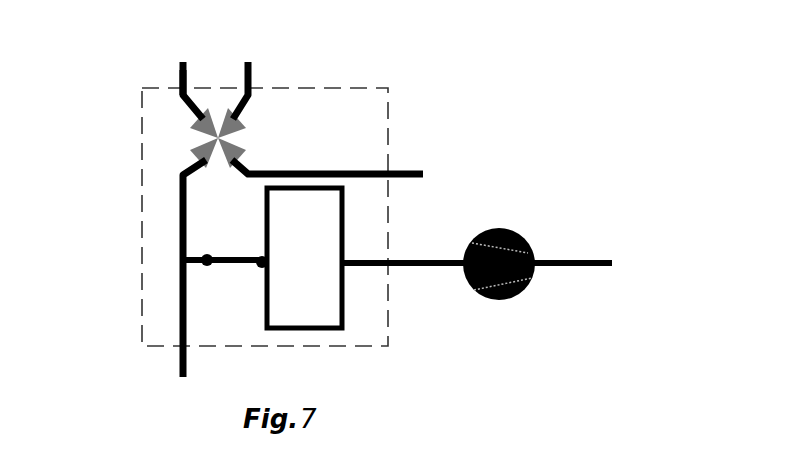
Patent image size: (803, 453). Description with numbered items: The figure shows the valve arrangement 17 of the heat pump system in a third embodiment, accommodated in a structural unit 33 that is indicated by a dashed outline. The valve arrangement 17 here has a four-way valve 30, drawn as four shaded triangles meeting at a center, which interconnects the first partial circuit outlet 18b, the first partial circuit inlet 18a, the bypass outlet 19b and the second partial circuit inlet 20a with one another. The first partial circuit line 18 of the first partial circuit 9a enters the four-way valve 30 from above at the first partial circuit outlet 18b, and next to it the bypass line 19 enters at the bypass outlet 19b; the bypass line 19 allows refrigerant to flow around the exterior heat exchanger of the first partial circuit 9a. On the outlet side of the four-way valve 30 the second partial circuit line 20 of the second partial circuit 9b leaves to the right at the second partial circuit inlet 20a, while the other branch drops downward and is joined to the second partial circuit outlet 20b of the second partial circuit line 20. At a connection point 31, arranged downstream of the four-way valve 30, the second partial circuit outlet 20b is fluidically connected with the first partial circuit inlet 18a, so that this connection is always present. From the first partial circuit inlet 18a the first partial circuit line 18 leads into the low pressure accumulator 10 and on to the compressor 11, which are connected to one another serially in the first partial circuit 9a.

The valve arrangement 17 is at (145, 198).
The 4-way valve 30 is at (175, 138).
The first partial circuit line 18 is at (401, 142).
The first partial circuit 9a is at (176, 68).
The first partial circuit outlet 18b is at (182, 92).
The bypass line 19 is at (298, 68).
The bypass outlet 19b is at (253, 83).
The second partial circuit line 20 is at (317, 264).
The second partial circuit 9b is at (317, 264).
The second partial circuit inlet 20a is at (396, 172).
The second partial circuit outlet 20b is at (182, 346).
The connection point 31 is at (185, 258).
The first partial circuit inlet 18a is at (262, 258).
The low pressure accumulator 10 is at (328, 273).
The compressor 11 is at (507, 300).
The structural unit 33 is at (472, 92).